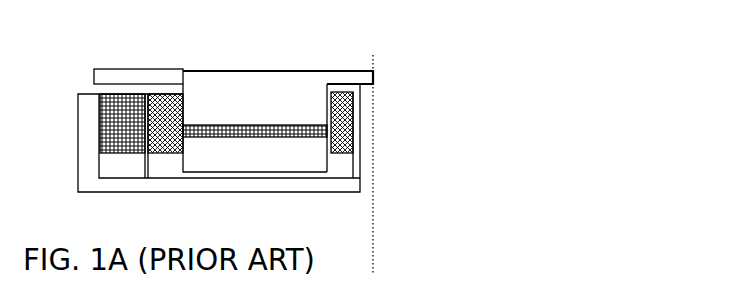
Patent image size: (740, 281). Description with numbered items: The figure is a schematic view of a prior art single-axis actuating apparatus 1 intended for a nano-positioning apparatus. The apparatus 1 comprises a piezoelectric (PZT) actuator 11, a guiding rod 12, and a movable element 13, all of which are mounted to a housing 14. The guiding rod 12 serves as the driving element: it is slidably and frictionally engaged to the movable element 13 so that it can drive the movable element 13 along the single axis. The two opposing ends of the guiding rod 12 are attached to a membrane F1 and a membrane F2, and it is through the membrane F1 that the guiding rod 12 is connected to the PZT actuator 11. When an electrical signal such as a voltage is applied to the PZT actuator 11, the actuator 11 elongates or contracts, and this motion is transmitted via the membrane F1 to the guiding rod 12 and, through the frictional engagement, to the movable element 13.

The single-axis actuating apparatus 1 is at (57, 37).
The piezoelectric (PZT) actuator 11 is at (100, 110).
The guiding rod 12 is at (358, 114).
The movable element 13 is at (212, 83).
The housing 14 is at (317, 190).
The membrane F1 is at (147, 167).
The membrane F2 is at (358, 158).